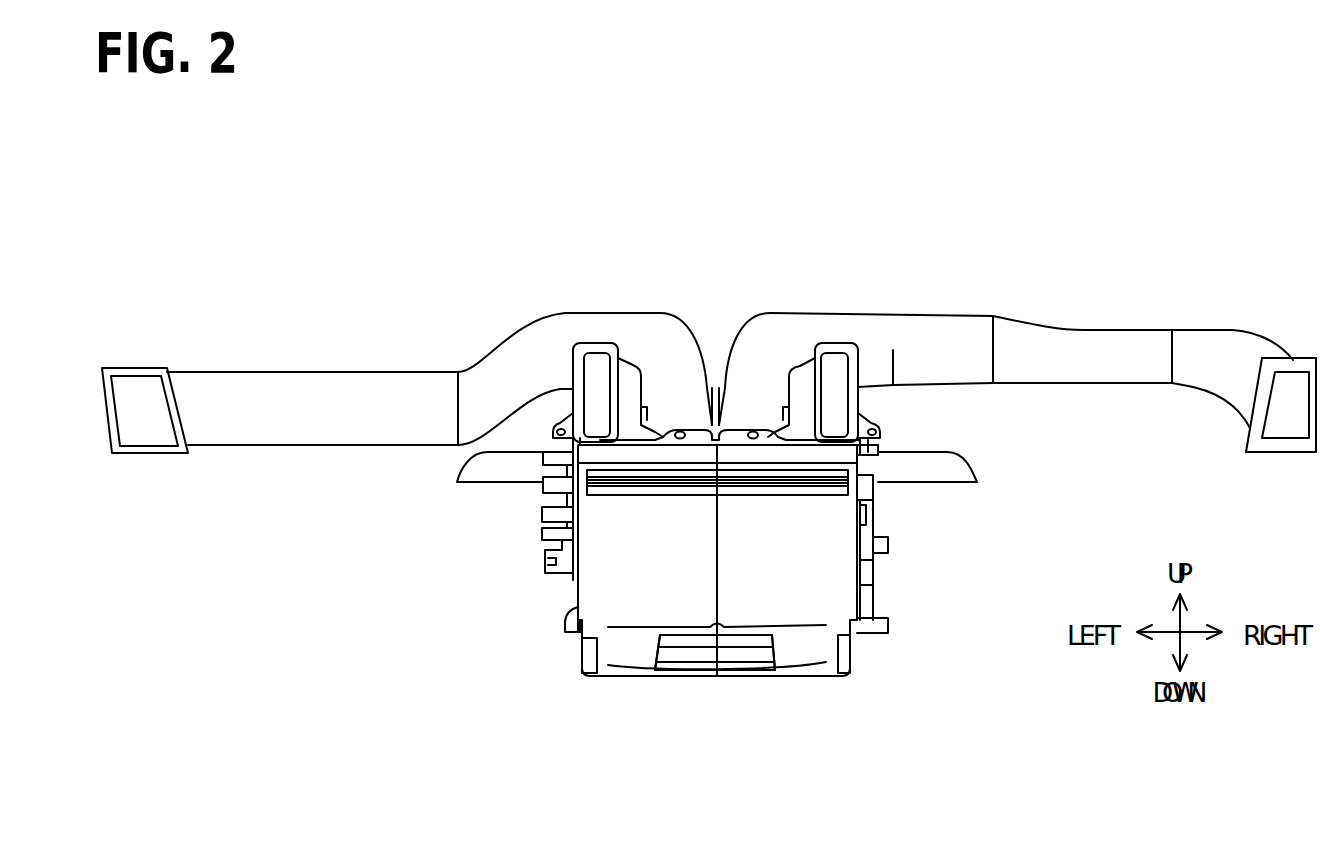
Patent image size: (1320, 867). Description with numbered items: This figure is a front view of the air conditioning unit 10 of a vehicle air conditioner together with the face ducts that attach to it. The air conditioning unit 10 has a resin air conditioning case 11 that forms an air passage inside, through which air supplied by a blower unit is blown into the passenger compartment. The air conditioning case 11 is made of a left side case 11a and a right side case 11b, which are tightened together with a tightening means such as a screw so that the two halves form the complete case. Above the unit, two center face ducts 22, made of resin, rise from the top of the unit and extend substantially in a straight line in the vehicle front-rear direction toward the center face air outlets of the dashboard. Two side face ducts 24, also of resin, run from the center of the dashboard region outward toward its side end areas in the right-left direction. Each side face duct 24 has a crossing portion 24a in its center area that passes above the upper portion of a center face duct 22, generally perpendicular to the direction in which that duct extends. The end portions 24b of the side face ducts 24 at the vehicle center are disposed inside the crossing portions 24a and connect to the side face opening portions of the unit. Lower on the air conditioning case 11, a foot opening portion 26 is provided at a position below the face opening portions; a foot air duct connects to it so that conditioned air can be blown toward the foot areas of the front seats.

The air conditioning unit 10 is at (548, 598).
The air conditioning case 11 is at (613, 728).
The left side case 11a is at (668, 606).
The right side case 11b is at (765, 607).
The center face duct 22 is at (598, 343).
The side face duct 24 is at (290, 390).
The crossing portion 24a is at (588, 313).
The end portion 24b is at (677, 422).
The foot opening portion 26 is at (765, 490).